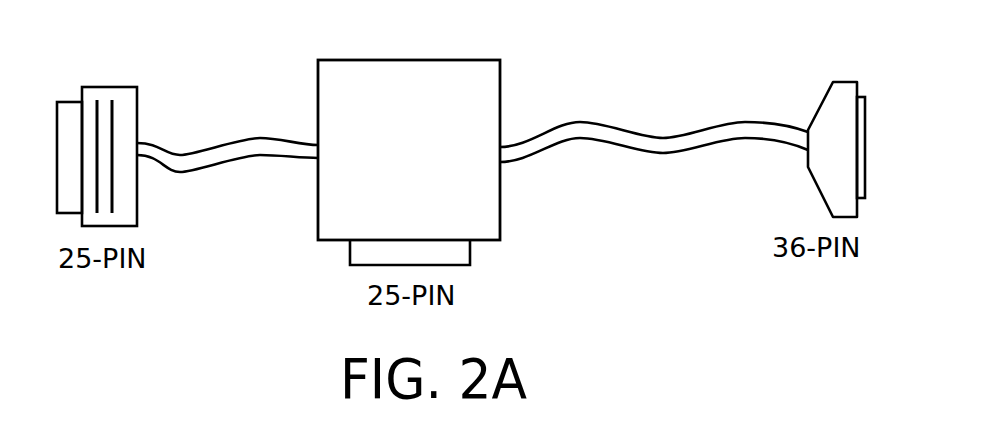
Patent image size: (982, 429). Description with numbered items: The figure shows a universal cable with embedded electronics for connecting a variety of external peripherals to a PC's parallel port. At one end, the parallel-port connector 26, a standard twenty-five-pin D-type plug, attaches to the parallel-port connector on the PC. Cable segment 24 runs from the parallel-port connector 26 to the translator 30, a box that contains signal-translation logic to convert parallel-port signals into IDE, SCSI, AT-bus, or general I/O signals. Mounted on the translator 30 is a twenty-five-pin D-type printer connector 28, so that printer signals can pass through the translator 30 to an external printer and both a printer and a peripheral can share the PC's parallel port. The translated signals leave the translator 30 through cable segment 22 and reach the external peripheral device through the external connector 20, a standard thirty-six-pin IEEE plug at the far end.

The external connector 20 is at (827, 93).
The cable segment 22 is at (615, 125).
The cable segment 24 is at (227, 139).
The parallel-port connector 26 is at (101, 85).
The printer connector 28 is at (350, 265).
The translator 30 is at (386, 58).